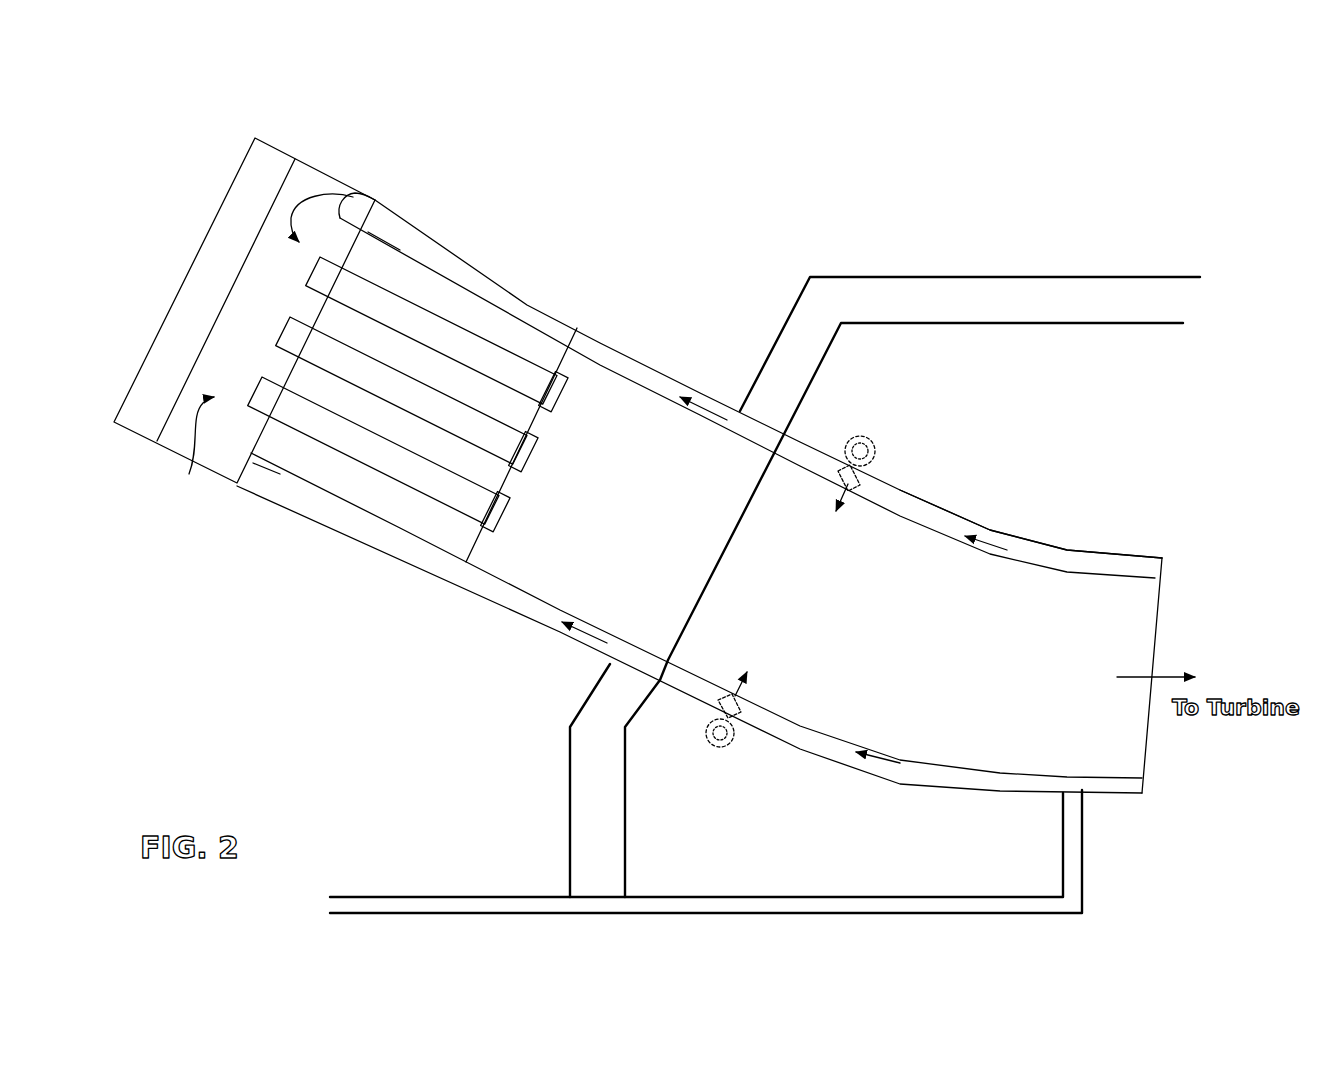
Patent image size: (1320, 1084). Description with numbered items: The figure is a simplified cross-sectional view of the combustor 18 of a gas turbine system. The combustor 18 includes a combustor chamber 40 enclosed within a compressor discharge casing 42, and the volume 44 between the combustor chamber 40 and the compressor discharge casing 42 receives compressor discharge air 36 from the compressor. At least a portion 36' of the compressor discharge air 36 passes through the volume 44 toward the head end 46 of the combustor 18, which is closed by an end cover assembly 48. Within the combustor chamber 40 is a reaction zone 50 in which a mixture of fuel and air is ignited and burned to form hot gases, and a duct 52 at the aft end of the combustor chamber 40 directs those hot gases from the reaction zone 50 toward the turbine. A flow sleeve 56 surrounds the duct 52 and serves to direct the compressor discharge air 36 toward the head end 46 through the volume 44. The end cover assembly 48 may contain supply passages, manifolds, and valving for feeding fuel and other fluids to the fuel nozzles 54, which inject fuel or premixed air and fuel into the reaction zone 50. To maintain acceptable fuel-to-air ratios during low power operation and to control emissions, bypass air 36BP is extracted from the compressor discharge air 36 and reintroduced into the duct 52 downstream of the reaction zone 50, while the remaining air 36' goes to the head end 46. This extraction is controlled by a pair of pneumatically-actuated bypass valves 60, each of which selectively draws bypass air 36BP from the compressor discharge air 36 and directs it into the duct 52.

The combustor 18 is at (818, 216).
The compressor discharge air 36 is at (946, 676).
The portion of the compressor discharge air 36' is at (450, 427).
The bypass air 36BP is at (737, 686).
The combustor chamber 40 is at (510, 583).
The compressor discharge casing 42 is at (412, 560).
The volume 44 is at (530, 308).
The head end 46 is at (343, 162).
The end cover assembly 48 is at (134, 436).
The reaction zone 50 is at (612, 424).
The duct 52 is at (813, 595).
The fuel nozzles 54 is at (350, 420).
The flow sleeve 56 is at (1005, 533).
The pneumatically-actuated bypass valve 60 is at (898, 437).